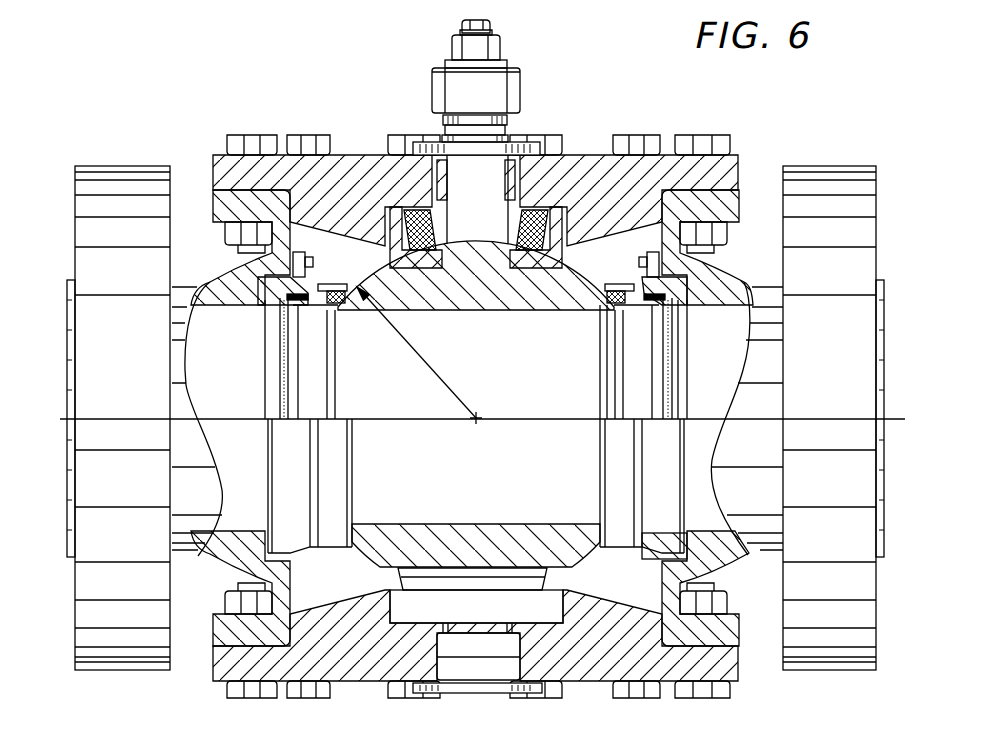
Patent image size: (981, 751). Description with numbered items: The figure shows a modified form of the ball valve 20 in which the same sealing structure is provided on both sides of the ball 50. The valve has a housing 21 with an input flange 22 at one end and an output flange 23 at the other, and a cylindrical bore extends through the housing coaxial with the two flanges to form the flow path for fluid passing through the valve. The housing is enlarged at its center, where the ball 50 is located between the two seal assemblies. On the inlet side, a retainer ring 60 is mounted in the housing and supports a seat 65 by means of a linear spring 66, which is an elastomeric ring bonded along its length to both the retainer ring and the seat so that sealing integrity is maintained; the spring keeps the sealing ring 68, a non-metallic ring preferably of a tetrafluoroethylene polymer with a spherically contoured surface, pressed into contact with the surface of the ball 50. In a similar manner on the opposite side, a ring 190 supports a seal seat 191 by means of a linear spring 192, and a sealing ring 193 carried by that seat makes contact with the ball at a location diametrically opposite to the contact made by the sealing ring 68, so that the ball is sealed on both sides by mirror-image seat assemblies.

The ball valve 20 is at (60, 401).
The housing 21 is at (181, 291).
The input flange 22 is at (108, 177).
The output flange 23 is at (812, 177).
The ball 50 is at (373, 553).
The retainer ring 60 is at (273, 397).
The seal seat 65 is at (310, 303).
The linear spring 66 is at (296, 300).
The sealing ring 68 is at (325, 305).
The ring 190 is at (680, 400).
The seal seat 191 is at (643, 348).
The linear spring 192 is at (655, 320).
The sealing ring 193 is at (620, 292).